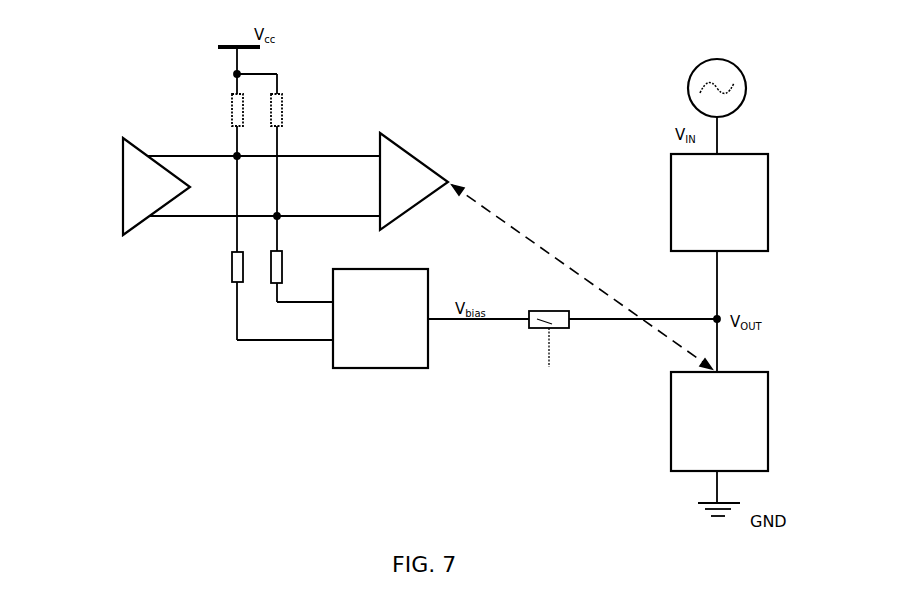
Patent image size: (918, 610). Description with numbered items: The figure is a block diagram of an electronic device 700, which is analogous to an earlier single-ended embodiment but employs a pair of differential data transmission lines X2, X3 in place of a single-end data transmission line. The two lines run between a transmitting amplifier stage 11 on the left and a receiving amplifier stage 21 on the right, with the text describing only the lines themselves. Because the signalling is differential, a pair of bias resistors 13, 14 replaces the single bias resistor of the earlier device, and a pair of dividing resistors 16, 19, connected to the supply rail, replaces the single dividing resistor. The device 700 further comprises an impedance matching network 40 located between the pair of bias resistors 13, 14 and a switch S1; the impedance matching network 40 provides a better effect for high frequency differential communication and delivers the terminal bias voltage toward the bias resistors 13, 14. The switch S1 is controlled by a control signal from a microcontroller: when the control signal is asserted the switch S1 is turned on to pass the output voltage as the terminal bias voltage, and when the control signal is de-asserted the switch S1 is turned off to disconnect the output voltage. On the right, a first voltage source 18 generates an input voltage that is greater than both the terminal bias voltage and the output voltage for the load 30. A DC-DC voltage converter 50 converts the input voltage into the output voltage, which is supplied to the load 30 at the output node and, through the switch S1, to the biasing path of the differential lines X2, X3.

The electronic device 700 is at (133, 61).
The first amplifier 11 is at (124, 139).
The dividing resistor 19 is at (230, 109).
The dividing resistor 16 is at (283, 109).
The second amplifier 21 is at (383, 135).
The bias resistor 13 is at (232, 280).
The bias resistor 14 is at (283, 274).
The impedance matching network 40 is at (430, 270).
The first voltage source 18 is at (746, 80).
The DC-DC voltage converter 50 is at (745, 155).
The load 30 is at (757, 373).
The switch S1 is at (545, 311).
The differential data transmission line X3 is at (292, 156).
The differential data transmission line X2 is at (290, 216).